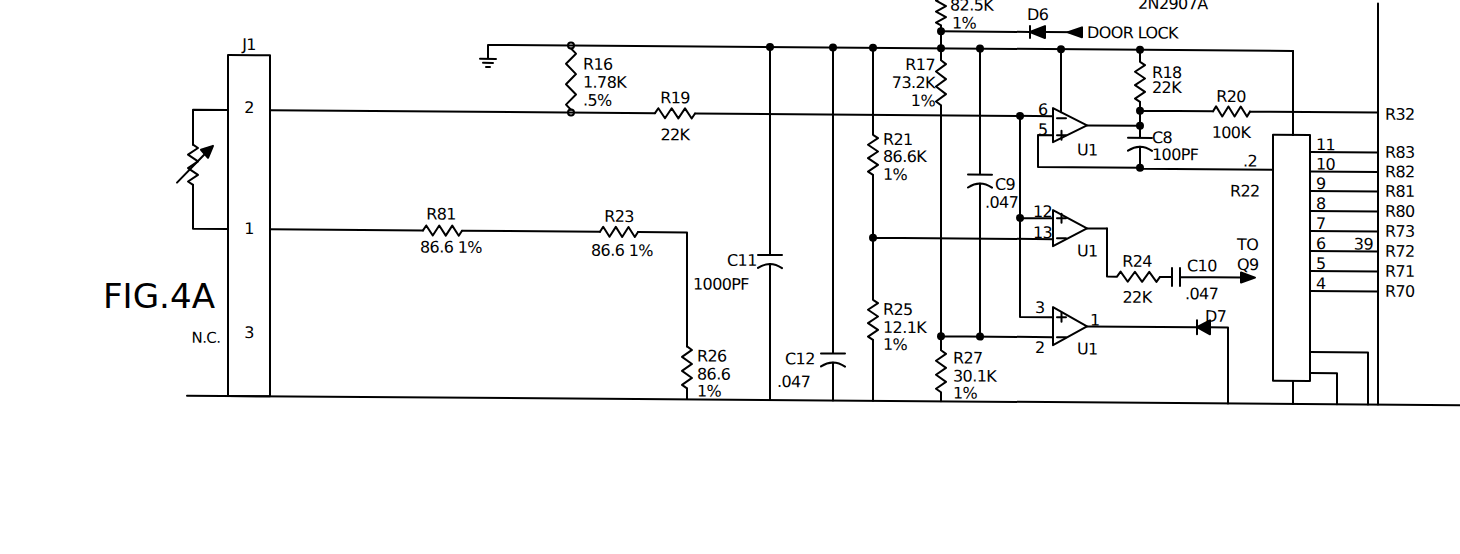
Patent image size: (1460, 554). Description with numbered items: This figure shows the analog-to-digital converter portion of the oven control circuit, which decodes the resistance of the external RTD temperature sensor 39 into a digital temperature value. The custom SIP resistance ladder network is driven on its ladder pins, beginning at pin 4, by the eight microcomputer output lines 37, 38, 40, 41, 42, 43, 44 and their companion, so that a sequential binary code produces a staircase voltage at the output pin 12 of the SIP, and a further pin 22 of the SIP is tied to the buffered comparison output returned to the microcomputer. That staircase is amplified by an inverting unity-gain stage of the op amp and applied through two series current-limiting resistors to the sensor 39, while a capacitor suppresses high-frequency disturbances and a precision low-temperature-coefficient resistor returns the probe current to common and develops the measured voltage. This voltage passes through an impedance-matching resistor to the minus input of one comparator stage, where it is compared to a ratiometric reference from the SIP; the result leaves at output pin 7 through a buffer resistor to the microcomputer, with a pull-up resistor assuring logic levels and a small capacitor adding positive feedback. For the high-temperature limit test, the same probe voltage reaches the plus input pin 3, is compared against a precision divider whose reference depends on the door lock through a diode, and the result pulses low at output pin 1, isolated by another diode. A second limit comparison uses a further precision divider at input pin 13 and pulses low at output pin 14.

The RTD temperature sensor 39 is at (177, 152).
The resistor network R22 pin 22 line 22 is at (1314, 102).
The output line 44 is at (1344, 145).
The output line 43 is at (1344, 165).
The output line 42 is at (1344, 184).
The output line 41 is at (1344, 204).
The output line 40 is at (1344, 224).
The output line 38 is at (1344, 264).
The output line 37 is at (1344, 284).
The output pin of sip R22 12 is at (1339, 368).
The op amp pin (minus input) 13 is at (1323, 379).
The op amp pin (plus input) 3 is at (1302, 392).
The op amp output pin 1 is at (1300, 93).
The pin of circuit R22 4 is at (1069, 82).
The op amp output pin 7 is at (1113, 119).
The op amp output pin 14 is at (1097, 221).